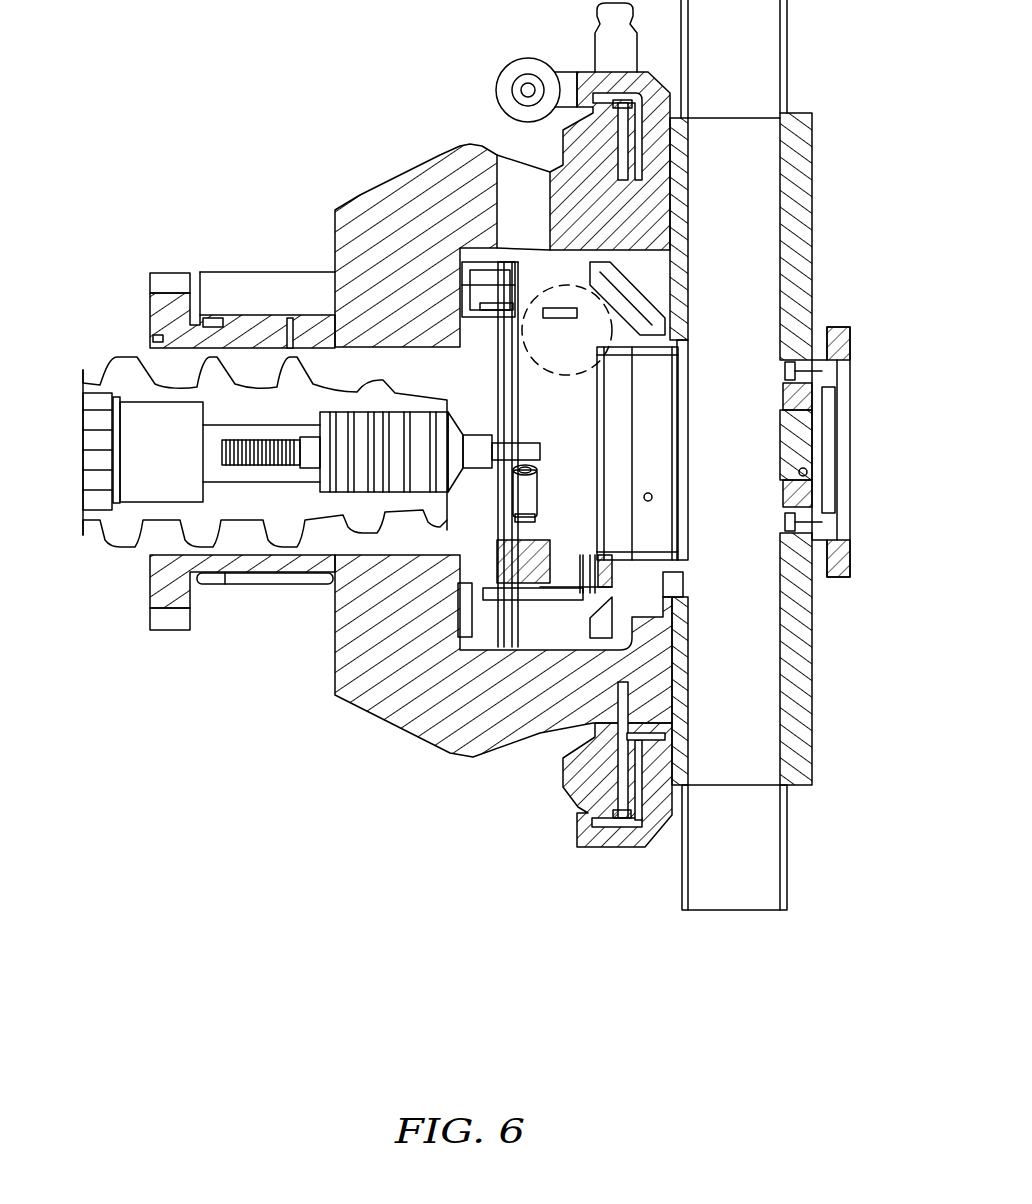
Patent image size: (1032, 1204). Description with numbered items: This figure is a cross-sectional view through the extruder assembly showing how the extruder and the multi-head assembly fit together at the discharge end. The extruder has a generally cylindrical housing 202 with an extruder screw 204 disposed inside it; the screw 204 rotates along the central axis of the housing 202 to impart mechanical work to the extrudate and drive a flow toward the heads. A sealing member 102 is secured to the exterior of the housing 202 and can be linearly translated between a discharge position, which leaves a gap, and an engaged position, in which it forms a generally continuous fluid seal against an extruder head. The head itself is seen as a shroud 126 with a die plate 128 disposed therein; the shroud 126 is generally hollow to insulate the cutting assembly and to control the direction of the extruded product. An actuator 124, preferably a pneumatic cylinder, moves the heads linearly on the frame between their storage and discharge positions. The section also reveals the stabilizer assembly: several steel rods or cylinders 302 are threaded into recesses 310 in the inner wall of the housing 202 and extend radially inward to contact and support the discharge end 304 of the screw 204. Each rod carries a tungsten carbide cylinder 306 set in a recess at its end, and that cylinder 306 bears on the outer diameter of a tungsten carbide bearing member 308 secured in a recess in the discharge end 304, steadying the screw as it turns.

The sealing member 102 is at (538, 282).
The actuator 124 is at (490, 60).
The shroud 126 is at (757, 163).
The die plate 128 is at (693, 400).
The housing 202 is at (356, 220).
The extruder screw 204 is at (118, 348).
The rods or cylinders 302 is at (530, 500).
The discharge end 304 is at (568, 455).
The tungsten carbide cylinder 306 is at (517, 467).
The tungsten carbide shaft or bearing member 308 is at (533, 450).
The recesses 310 is at (510, 525).